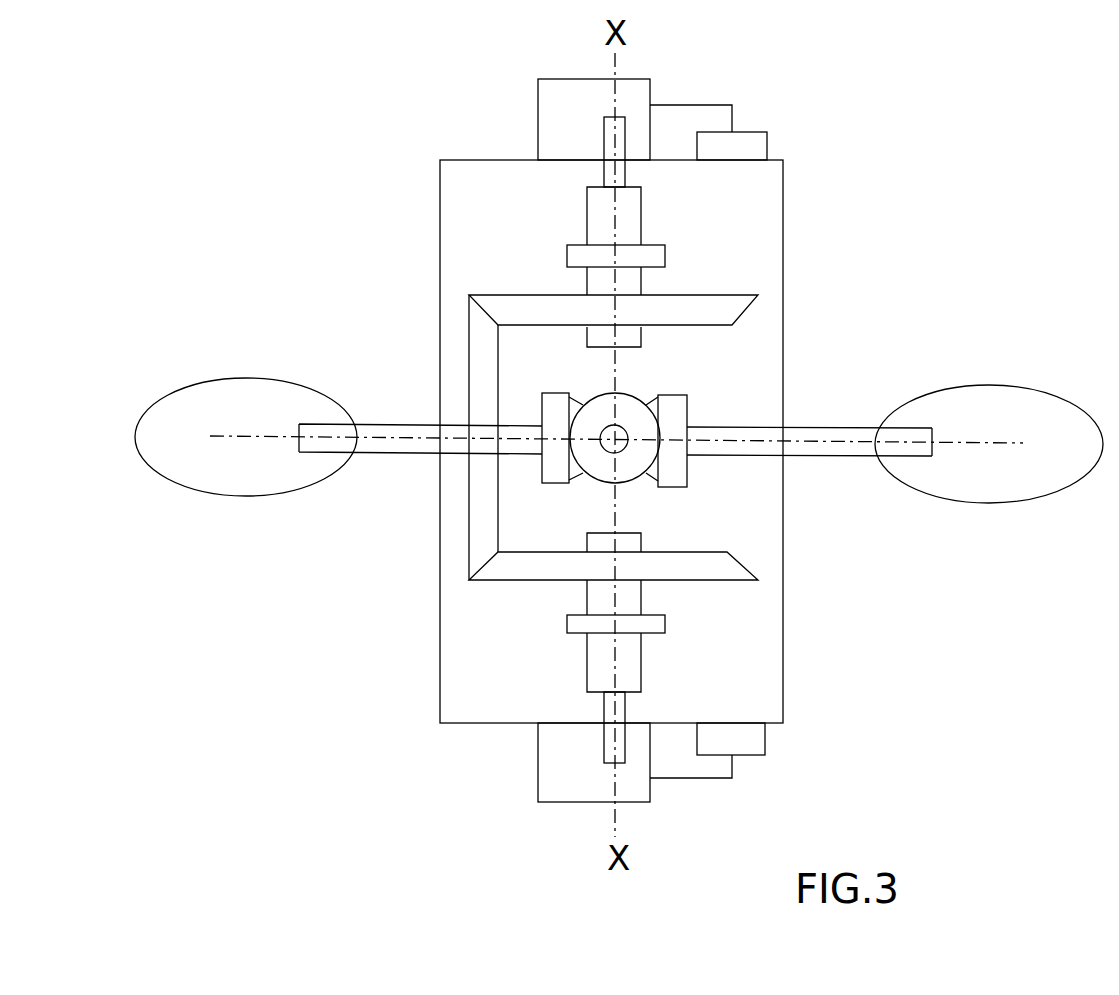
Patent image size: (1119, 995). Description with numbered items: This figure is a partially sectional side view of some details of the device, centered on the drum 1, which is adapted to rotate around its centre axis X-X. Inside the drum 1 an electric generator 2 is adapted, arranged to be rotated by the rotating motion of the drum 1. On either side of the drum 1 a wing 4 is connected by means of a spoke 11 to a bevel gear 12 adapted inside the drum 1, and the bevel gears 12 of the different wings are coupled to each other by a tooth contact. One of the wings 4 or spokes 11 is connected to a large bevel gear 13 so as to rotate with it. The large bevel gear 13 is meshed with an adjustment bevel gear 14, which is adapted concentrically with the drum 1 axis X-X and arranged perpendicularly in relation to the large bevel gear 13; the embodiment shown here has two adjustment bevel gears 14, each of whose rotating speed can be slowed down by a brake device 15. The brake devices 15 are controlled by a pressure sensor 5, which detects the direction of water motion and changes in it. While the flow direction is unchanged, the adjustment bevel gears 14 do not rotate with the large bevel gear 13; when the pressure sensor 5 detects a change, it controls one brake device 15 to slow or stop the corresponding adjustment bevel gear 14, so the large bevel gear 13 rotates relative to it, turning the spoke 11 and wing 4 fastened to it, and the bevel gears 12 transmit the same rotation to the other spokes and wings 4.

The drum 1 is at (785, 213).
The electric generator 2 is at (352, 177).
The wing 4 is at (227, 475).
The pressure sensor 5 is at (743, 147).
The spoke 11 is at (380, 443).
The bevel gear 12 is at (670, 466).
The large bevel gear 13 is at (482, 527).
The adjustment bevel gear 14 is at (693, 305).
The brake device 15 is at (557, 122).